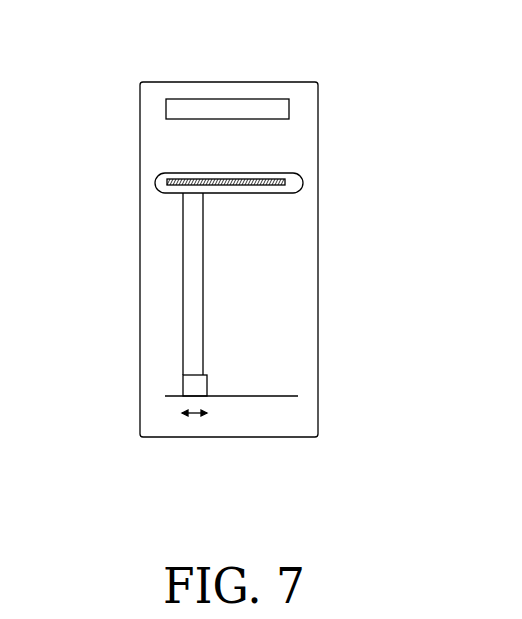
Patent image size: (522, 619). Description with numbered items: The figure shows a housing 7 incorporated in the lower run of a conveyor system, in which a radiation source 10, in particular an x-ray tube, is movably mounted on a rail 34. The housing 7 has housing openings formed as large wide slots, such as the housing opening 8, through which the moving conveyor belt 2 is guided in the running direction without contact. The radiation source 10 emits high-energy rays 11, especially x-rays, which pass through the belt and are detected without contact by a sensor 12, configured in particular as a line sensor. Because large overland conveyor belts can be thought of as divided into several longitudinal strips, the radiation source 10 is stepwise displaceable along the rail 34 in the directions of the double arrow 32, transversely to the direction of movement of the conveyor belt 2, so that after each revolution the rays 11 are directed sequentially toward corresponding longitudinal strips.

The conveyor belt 2 is at (172, 173).
The housing 7 is at (318, 355).
The housing opening 8 is at (303, 177).
The radiation source 10 is at (183, 383).
The high-energy rays 11 is at (183, 273).
The sensor 12 is at (238, 99).
The double arrow 32 is at (193, 415).
The rail 34 is at (275, 397).